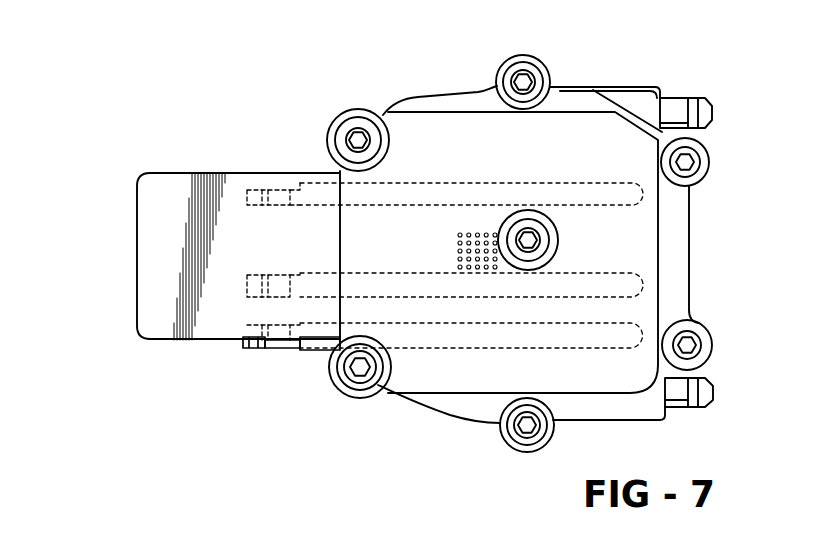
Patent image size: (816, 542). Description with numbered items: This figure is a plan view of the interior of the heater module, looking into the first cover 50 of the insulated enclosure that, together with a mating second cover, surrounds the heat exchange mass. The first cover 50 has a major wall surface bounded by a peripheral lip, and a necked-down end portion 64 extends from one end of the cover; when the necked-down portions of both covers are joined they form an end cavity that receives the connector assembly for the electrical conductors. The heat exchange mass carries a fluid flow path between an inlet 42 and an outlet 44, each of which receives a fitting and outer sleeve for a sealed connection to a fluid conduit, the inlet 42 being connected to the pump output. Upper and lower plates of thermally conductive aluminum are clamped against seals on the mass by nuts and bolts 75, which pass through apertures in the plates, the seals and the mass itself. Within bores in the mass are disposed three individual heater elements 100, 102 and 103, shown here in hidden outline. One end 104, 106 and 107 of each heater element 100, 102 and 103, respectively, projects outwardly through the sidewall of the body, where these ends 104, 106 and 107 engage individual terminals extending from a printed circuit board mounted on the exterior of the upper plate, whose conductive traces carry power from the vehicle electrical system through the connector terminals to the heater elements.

The inlet 42 is at (720, 402).
The outlet 44 is at (715, 100).
The first cover 50 is at (610, 113).
The necked-down end portion 64 is at (146, 320).
The nuts and bolts 75 is at (356, 126).
The heater element 100 is at (353, 270).
The heater element 102 is at (316, 347).
The heater element 103 is at (302, 176).
The end of heater element 104 is at (255, 280).
The end of heater element 106 is at (247, 347).
The end of heater element 107 is at (247, 190).